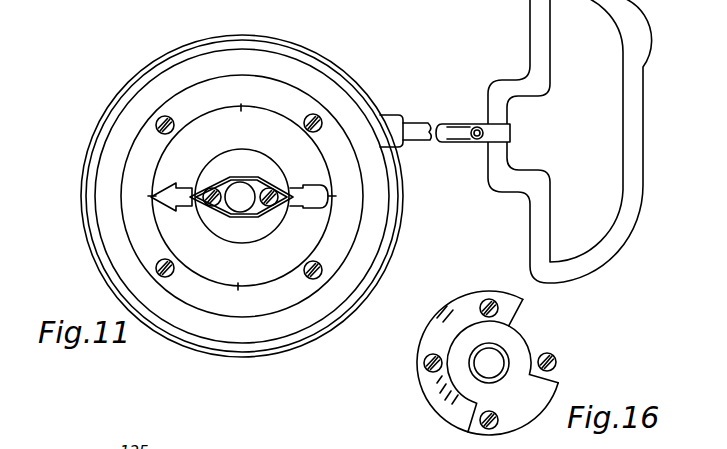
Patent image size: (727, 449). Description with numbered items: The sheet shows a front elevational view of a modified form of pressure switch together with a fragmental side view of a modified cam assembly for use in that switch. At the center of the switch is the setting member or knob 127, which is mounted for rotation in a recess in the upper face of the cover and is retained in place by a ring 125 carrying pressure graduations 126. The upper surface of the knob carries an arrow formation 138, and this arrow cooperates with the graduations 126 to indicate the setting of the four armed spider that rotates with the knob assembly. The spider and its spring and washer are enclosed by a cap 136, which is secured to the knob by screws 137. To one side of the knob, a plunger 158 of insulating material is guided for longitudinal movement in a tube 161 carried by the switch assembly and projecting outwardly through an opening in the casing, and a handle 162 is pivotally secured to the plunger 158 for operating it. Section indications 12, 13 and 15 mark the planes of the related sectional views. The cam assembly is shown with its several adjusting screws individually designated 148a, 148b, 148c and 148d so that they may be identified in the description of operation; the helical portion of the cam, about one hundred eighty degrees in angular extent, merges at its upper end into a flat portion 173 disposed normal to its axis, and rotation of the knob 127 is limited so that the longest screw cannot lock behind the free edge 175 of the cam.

In FIG. 11, the ring 125 is at (285, 284).
In FIG. 11, the pressure graduations 126 is at (250, 307).
In FIG. 11, the setting member or knob 127 is at (310, 242).
In FIG. 11, the cap 136 is at (264, 184).
In FIG. 11, the screws 137 is at (211, 186).
In FIG. 11, the arrow formation 138 is at (181, 204).
In FIG. 11, the plunger 158 is at (423, 138).
In FIG. 11, the tube 161 is at (388, 116).
In FIG. 11, the handle 162 is at (625, 147).
In FIG. 11, the section line 12 is at (100, 196).
In FIG. 11, the section line 13 is at (240, 0).
In FIG. 11, the section line 15 is at (78, 100).
In FIG. 16, the adjusting screw 148a is at (553, 356).
In FIG. 16, the adjusting screw 148b is at (483, 304).
In FIG. 16, the adjusting screw 148c is at (426, 361).
In FIG. 16, the adjusting screw 148d is at (482, 416).
In FIG. 16, the flat portion 173 is at (532, 410).
In FIG. 16, the free edge 175 is at (557, 378).